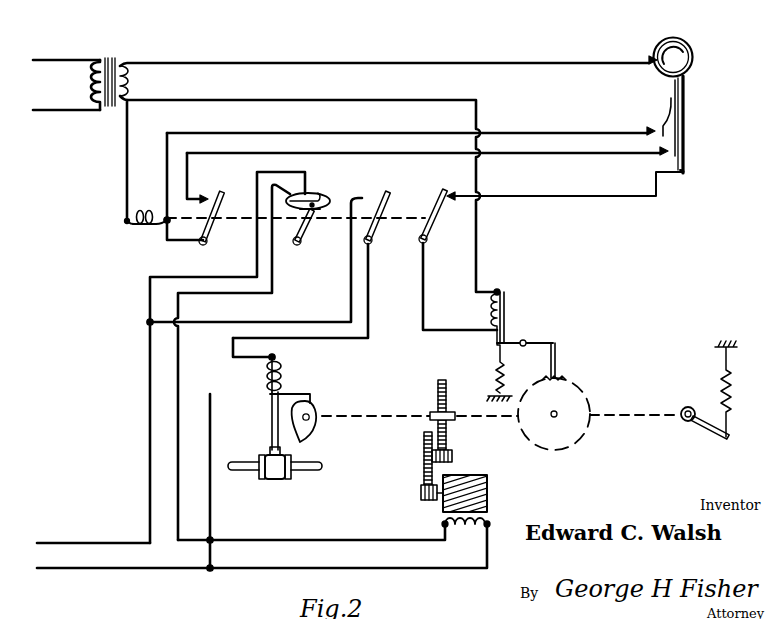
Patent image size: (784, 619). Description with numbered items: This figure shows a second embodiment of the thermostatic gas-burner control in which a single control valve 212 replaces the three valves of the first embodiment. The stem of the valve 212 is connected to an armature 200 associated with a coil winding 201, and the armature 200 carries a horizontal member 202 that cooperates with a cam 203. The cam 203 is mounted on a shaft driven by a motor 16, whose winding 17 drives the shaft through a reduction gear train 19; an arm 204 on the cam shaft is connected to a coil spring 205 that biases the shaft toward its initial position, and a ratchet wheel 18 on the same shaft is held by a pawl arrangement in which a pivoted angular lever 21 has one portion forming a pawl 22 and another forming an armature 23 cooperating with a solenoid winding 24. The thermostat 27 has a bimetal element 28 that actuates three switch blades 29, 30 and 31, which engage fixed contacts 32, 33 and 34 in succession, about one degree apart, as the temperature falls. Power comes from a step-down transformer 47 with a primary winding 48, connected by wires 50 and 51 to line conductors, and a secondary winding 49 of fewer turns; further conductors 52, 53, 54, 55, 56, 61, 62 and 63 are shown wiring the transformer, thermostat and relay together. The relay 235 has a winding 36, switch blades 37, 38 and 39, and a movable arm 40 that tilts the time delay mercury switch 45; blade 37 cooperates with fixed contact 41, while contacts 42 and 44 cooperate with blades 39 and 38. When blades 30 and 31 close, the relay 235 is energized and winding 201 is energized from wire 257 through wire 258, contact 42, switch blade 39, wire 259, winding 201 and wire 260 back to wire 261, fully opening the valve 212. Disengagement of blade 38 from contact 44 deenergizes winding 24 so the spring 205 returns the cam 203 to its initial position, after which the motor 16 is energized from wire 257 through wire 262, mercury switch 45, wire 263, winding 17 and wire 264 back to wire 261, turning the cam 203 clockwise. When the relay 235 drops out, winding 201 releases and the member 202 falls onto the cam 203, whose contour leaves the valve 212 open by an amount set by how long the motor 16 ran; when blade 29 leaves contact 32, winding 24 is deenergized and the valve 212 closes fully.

The motor 16 is at (504, 501).
The winding 17 is at (467, 532).
The ratchet wheel 18 is at (578, 404).
The reduction gear train 19 is at (405, 469).
The pivoted angular lever 21 is at (543, 334).
The pawl 22 is at (556, 361).
The armature 23 is at (490, 304).
The solenoid winding 24 is at (508, 312).
The thermostat 27 is at (704, 38).
The bimetal element 28 is at (694, 58).
The switch blade 29 is at (687, 141).
The switch blade 30 is at (672, 138).
The switch blade 31 is at (669, 110).
The fixed electrical contact 32 is at (680, 174).
The fixed electrical contact 33 is at (664, 153).
The fixed electrical contact 34 is at (652, 127).
The relay winding 36 is at (144, 211).
The switch blade 37 is at (222, 202).
The switch blade 38 is at (429, 232).
The switch blade 39 is at (376, 227).
The movable arm 40 is at (309, 238).
The fixed electrical contact 41 is at (207, 195).
The fixed electrical contact 42 is at (372, 190).
The fixed electrical contact 44 is at (450, 192).
The time delay mercury switch 45 is at (314, 194).
The step-down transformer 47 is at (105, 42).
The primary winding 48 is at (90, 82).
The secondary winding 49 is at (132, 82).
The wire 50 is at (44, 59).
The wire 51 is at (47, 111).
The conductor 52 is at (192, 63).
The conductor 53 is at (568, 197).
The conductor 54 is at (425, 303).
The conductor 55 is at (478, 243).
The conductor 56 is at (125, 167).
The conductor 61 is at (360, 134).
The conductor 62 is at (502, 156).
The conductor 63 is at (168, 243).
The armature 200 is at (270, 395).
The coil winding 201 is at (278, 357).
The horizontal member 202 is at (306, 400).
The cam 203 is at (318, 410).
The arm 204 is at (708, 433).
The coil spring 205 is at (732, 405).
The control valve 212 is at (295, 461).
The relay 235 is at (124, 227).
The wire 257 is at (97, 541).
The wire 258 is at (278, 320).
The wire 259 is at (370, 329).
The wire 260 is at (212, 461).
The wire 261 is at (130, 570).
The wire 262 is at (200, 277).
The wire 263 is at (180, 387).
The wire 264 is at (308, 568).